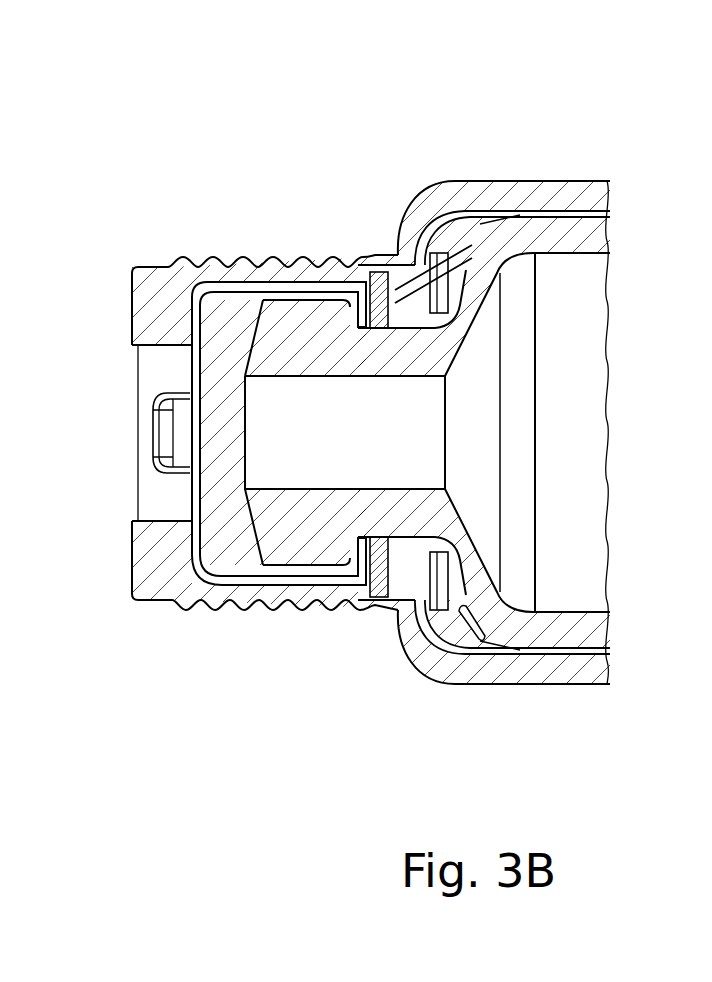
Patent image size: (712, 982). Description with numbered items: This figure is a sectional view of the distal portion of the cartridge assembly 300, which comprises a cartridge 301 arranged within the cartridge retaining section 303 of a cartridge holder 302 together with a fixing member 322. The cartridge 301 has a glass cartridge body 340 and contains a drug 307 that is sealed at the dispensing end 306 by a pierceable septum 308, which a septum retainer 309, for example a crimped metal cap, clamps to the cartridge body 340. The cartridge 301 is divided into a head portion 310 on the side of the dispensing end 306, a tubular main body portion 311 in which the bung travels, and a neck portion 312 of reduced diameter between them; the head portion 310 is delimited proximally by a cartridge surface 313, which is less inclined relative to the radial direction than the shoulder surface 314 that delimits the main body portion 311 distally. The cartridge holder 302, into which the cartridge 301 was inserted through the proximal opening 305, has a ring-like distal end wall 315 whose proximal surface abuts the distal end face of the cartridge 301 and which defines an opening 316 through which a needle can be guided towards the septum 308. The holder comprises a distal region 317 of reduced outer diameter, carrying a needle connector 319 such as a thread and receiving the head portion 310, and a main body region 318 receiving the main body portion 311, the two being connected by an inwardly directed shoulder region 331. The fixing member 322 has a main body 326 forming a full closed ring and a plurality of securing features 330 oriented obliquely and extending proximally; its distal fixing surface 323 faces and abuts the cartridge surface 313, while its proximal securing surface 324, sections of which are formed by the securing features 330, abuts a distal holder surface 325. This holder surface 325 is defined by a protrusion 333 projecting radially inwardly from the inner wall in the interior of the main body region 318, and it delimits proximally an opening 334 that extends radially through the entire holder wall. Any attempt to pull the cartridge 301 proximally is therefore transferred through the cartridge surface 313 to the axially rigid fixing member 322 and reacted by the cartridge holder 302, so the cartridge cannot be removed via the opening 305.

The cartridge assembly 300 is at (388, 103).
The cartridge 301 is at (603, 236).
The cartridge holder 302 is at (598, 193).
The cartridge retaining section 303 is at (610, 651).
The opening 305 is at (62, 262).
The dispensing end 306 is at (198, 425).
The drug 307 is at (598, 404).
The septum 308 is at (240, 313).
The septum retainer 309 is at (288, 287).
The head portion 310 is at (295, 548).
The main body portion 311 is at (578, 633).
The neck portion 312 is at (387, 517).
The cartridge surface 313 is at (375, 275).
The shoulder surface 314 is at (505, 213).
The distal end wall 315 is at (150, 297).
The opening 316 is at (157, 367).
The distal region 317 is at (178, 262).
The main body region 318 is at (605, 178).
The needle connector 319 is at (223, 604).
The fixing member 322 is at (462, 245).
The fixing surface 323 is at (380, 253).
The securing surface 324 is at (497, 200).
The holder surface 325 is at (492, 633).
The main body 326 is at (425, 616).
The securing features 330 is at (452, 640).
The shoulder region 331 is at (433, 628).
The protrusion 333 is at (512, 208).
The opening 334 is at (405, 262).
The cartridge body 340 is at (598, 631).